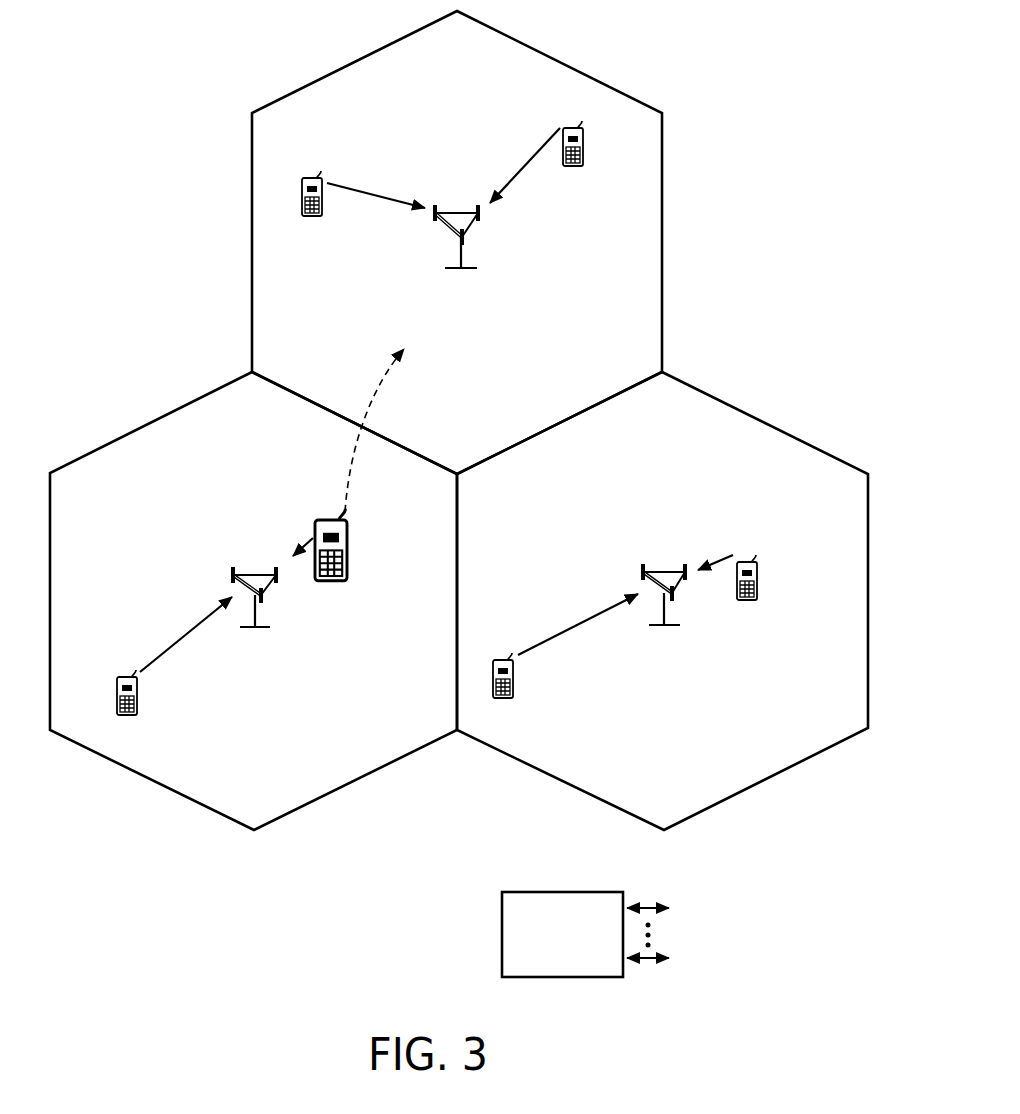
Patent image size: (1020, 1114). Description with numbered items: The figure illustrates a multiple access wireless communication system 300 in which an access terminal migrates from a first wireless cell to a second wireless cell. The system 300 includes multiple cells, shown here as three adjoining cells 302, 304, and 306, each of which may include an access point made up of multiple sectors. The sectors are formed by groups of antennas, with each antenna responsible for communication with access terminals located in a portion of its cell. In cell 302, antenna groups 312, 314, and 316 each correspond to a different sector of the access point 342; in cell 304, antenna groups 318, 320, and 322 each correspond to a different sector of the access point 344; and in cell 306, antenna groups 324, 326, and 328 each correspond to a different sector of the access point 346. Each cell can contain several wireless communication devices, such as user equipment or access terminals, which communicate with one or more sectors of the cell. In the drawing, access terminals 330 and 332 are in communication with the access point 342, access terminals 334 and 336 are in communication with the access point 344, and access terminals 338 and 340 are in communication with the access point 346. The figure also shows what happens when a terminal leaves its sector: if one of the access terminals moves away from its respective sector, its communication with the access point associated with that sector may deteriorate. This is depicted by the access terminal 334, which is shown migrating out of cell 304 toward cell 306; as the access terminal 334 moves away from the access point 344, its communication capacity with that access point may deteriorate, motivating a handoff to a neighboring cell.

The multiple access wireless communication system 300 is at (770, 75).
The cell 302 is at (689, 419).
The cell 304 is at (444, 511).
The cell 306 is at (300, 372).
The antenna group 312 is at (643, 569).
The antenna group 314 is at (677, 597).
The antenna group 316 is at (689, 578).
The antenna group 318 is at (264, 598).
The antenna group 320 is at (279, 579).
The antenna group 322 is at (235, 567).
The antenna group 324 is at (435, 219).
The antenna group 326 is at (480, 221).
The antenna group 328 is at (468, 238).
The access terminal 330 is at (561, 892).
The access terminal 332 is at (563, 646).
The access terminal 334 is at (326, 518).
The access terminal 336 is at (167, 656).
The access terminal 338 is at (356, 181).
The access terminal 340 is at (543, 149).
The access point 342 is at (677, 588).
The access point 344 is at (255, 591).
The access point 346 is at (468, 237).